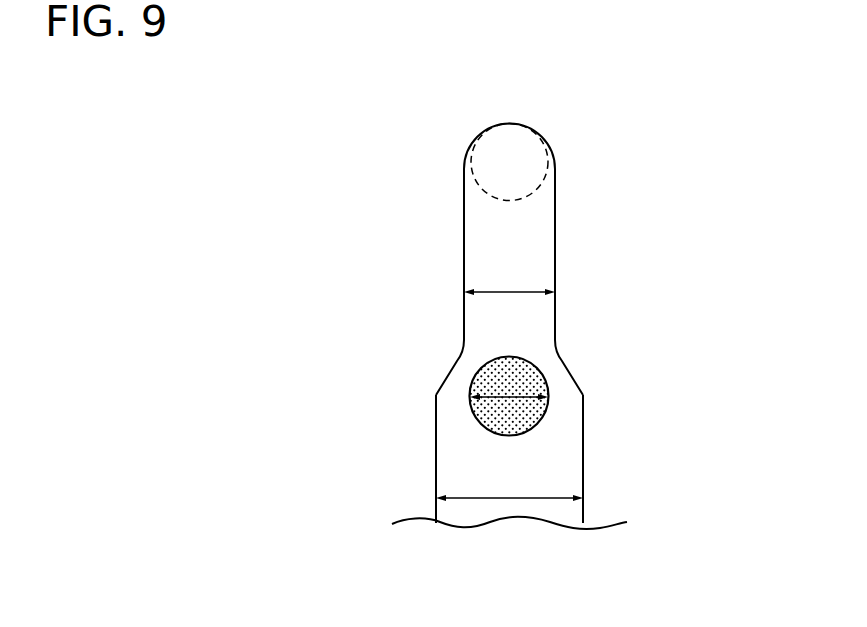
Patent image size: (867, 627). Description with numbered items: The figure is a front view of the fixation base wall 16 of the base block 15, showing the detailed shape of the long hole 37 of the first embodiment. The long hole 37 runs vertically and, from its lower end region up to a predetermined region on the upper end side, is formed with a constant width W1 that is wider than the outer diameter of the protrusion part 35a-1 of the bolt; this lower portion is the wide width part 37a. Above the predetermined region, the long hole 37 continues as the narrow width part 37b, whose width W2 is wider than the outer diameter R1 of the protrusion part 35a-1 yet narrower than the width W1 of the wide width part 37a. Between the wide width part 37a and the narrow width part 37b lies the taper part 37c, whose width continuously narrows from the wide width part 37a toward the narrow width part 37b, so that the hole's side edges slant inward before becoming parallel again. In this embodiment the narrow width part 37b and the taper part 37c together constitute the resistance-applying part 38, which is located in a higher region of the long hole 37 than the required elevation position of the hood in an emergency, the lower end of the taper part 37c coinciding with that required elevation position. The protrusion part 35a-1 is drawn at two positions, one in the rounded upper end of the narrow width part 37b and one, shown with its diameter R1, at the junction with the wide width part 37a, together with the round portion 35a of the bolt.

The fixation base wall 16 is at (474, 305).
The base block 15 is at (474, 328).
The protrusion part 35a-1 is at (624, 288).
The round portion 35a is at (548, 179).
The long hole 37 is at (474, 463).
The wide width part 37a is at (437, 476).
The narrow width part 37b is at (464, 236).
The taper part 37c is at (450, 384).
The resistance-applying part 38 is at (469, 260).
The width of wide width part W1 is at (513, 500).
The width of narrow width part W2 is at (510, 291).
The outer diameter of protrusion part R1 is at (520, 393).